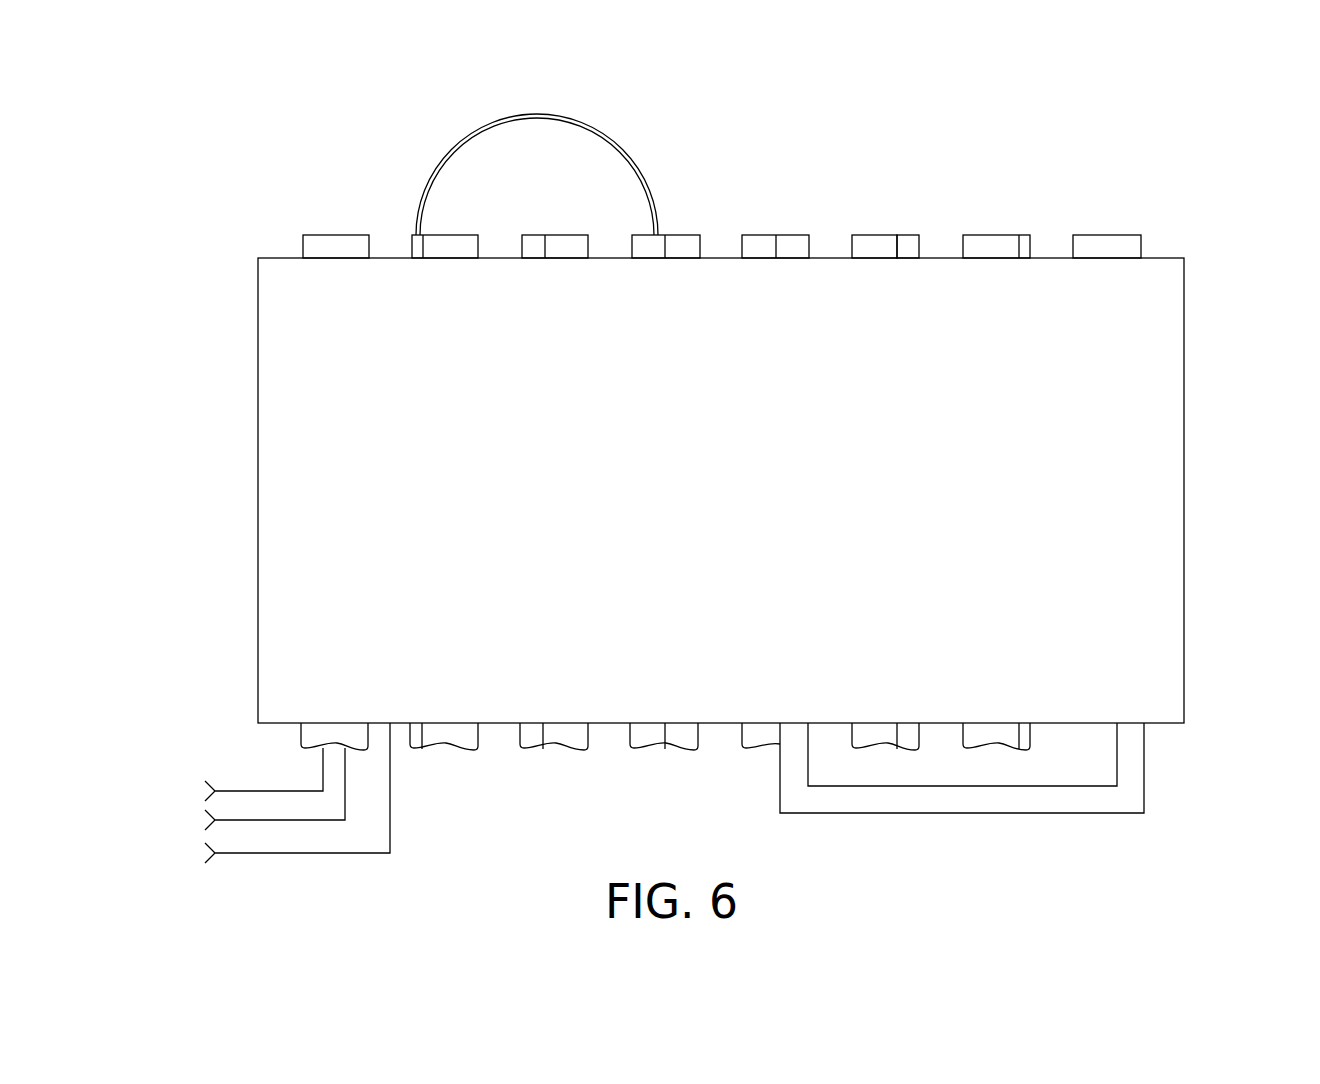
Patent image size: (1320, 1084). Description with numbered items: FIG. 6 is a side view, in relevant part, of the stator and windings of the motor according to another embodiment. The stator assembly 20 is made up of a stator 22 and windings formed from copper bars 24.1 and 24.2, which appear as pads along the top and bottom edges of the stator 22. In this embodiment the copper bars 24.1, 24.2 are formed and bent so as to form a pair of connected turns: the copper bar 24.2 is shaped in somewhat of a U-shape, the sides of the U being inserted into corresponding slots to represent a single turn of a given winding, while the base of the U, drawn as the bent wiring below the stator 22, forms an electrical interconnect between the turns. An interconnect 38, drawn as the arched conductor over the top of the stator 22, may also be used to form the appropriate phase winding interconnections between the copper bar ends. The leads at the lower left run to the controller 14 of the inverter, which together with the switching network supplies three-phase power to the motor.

The stator assembly 20 is at (1046, 179).
The stator 22 is at (1120, 449).
The copper bar 24.1 is at (907, 235).
The copper bar 24.2 is at (878, 235).
The interconnect 38 is at (583, 121).
The controller 14 is at (235, 793).